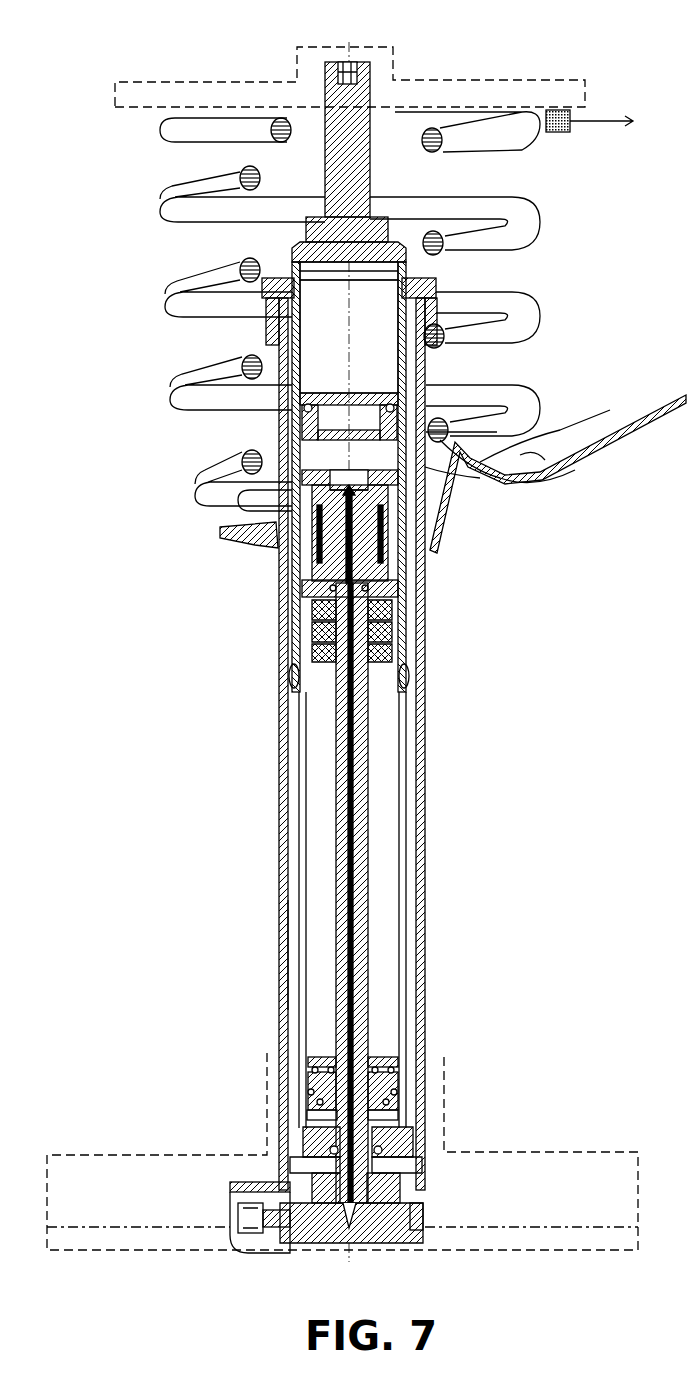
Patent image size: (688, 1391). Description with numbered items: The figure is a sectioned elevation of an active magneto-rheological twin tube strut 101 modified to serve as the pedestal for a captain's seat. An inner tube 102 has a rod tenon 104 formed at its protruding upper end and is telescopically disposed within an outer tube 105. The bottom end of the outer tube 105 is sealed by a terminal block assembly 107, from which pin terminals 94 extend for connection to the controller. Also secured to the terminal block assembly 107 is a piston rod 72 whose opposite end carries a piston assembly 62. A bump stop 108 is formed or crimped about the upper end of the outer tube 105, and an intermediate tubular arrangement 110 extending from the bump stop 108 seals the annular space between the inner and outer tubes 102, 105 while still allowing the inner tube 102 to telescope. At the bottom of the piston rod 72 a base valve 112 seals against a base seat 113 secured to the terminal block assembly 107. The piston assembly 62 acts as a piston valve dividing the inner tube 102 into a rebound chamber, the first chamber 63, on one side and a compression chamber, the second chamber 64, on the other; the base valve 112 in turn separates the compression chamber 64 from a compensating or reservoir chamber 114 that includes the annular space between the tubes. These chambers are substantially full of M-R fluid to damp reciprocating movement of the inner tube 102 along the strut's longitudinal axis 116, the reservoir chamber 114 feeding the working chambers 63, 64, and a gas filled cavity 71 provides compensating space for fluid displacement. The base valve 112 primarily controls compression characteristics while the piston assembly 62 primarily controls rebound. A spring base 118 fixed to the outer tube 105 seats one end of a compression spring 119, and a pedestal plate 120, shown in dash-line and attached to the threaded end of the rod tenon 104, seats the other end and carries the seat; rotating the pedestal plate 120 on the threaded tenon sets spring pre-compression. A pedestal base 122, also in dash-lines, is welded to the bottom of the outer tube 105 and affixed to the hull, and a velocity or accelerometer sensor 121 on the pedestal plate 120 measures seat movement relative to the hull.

The pedestal plate 120 is at (197, 82).
The rod tenon 104 is at (368, 138).
The velocity or accelerometer sensor 121 is at (572, 132).
The compression spring 119 is at (226, 291).
The bump stop 108 is at (436, 292).
The gas filled cavity 71 is at (334, 340).
The longitudinal axis 116 is at (365, 360).
The first chamber 63 is at (322, 459).
The spring base 118 is at (628, 425).
The piston assembly 62 is at (400, 546).
The intermediate tubular arrangement 110 is at (290, 560).
The strut 101 is at (508, 646).
The outer tube 105 is at (281, 737).
The piston rod 72 is at (370, 764).
The inner tube 102 is at (300, 848).
The second chamber 64 is at (389, 881).
The reservoir chamber 114 is at (290, 961).
The pedestal base 122 is at (112, 1153).
The base seat 113 is at (300, 1133).
The base valve 112 is at (426, 1084).
The pin terminals 94 is at (262, 1235).
The terminal block assembly 107 is at (430, 1234).